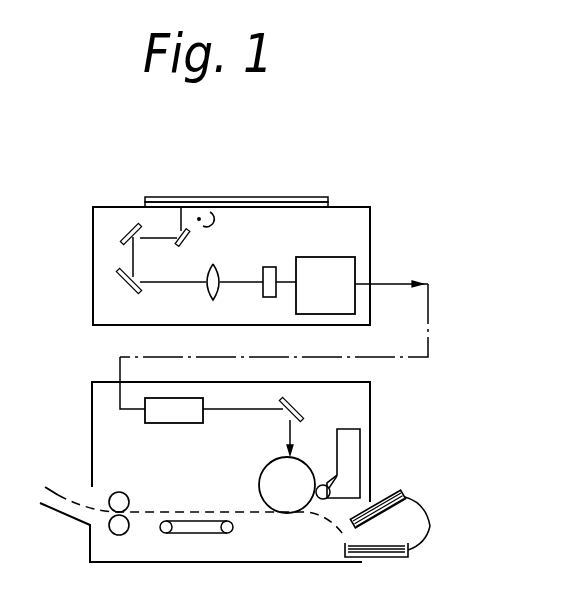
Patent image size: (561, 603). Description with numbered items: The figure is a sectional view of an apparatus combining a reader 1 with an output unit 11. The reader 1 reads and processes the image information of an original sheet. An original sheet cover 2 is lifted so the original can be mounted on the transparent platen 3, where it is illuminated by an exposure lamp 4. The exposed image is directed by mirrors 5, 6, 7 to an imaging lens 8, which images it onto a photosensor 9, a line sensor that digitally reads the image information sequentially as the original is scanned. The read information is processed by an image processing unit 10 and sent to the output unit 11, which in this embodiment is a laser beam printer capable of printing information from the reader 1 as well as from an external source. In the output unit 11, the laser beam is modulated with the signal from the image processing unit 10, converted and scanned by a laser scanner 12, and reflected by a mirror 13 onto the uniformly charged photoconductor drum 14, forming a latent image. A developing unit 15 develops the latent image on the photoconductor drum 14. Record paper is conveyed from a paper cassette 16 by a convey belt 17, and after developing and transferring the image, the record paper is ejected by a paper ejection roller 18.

The reader 1 is at (110, 206).
The original sheet cover 2 is at (252, 197).
The platen 3 is at (312, 201).
The exposure lamp 4 is at (215, 212).
The mirror 5 is at (189, 239).
The mirror 6 is at (123, 242).
The mirror 7 is at (120, 282).
The imaging lens 8 is at (206, 293).
The photosensor 9 is at (277, 268).
The image processing unit 10 is at (353, 268).
The output unit 11 is at (92, 403).
The laser scanner 12 is at (160, 424).
The mirror 13 is at (307, 410).
The photoconductor drum 14 is at (265, 464).
The developing unit 15 is at (362, 448).
The paper cassette 16 is at (411, 523).
The convey belt 17 is at (207, 534).
The paper ejection roller 18 is at (119, 535).